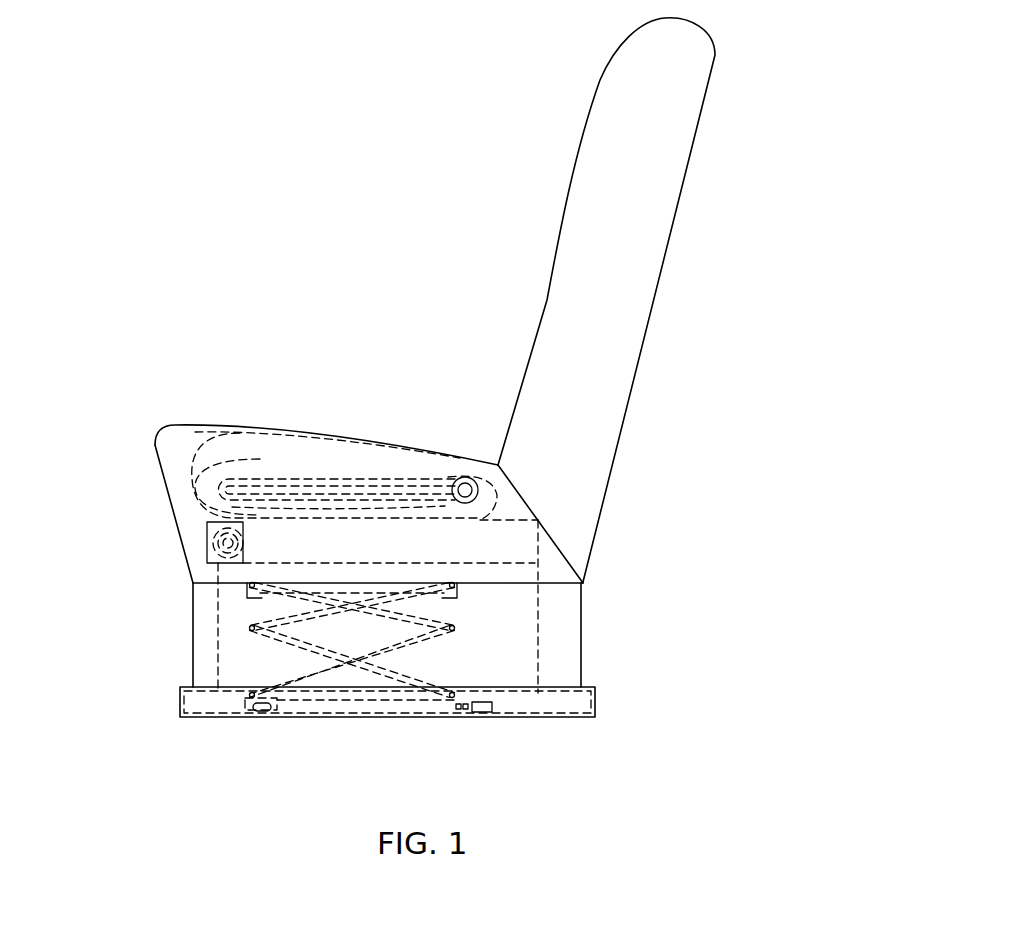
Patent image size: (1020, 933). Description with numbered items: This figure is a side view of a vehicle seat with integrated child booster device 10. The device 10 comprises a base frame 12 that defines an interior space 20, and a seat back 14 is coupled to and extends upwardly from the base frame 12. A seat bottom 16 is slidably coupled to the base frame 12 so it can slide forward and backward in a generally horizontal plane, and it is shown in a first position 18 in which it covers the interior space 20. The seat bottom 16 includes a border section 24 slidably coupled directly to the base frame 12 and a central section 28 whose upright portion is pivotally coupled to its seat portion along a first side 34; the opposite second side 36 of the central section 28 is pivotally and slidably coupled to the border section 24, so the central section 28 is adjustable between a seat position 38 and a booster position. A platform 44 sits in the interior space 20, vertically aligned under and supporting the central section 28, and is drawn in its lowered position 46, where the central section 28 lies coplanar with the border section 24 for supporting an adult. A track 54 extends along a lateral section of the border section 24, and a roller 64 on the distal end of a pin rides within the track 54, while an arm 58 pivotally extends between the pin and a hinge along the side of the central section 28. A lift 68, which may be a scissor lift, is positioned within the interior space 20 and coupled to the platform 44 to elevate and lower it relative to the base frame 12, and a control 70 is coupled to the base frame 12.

The vehicle seat with integrated child booster device 10 is at (297, 193).
The base frame 12 is at (423, 682).
The seat back 14 is at (653, 269).
The seat bottom 16 is at (185, 473).
The first position 18 is at (165, 565).
The interior space 20 is at (492, 602).
The border section 24 is at (205, 432).
The central section 28 is at (340, 462).
The first side 34 is at (188, 493).
The second side 36 is at (503, 497).
The seat position 38 is at (457, 438).
The platform 44 is at (530, 562).
The lowered position 46 is at (205, 538).
The track 54 is at (282, 488).
The arm 58 is at (380, 478).
The roller 64 is at (478, 485).
The lift 68 is at (455, 643).
The control 70 is at (263, 708).